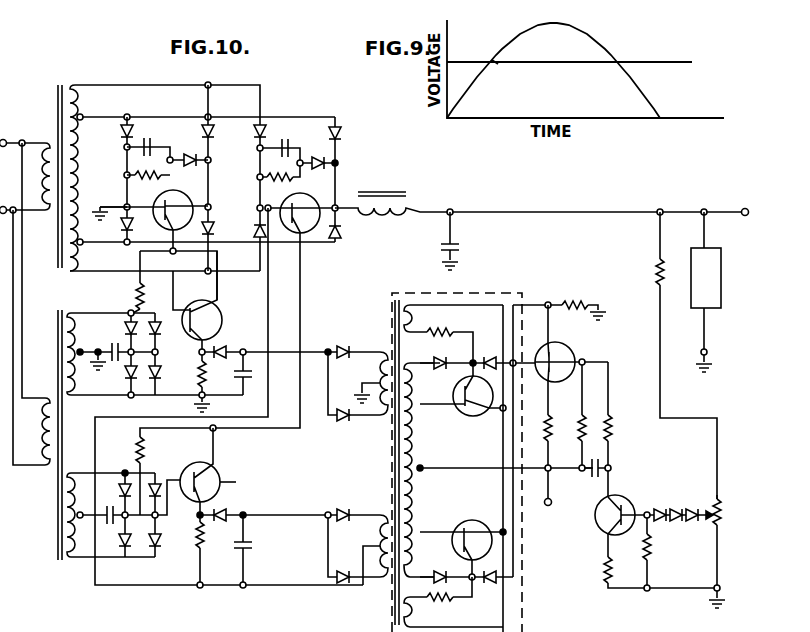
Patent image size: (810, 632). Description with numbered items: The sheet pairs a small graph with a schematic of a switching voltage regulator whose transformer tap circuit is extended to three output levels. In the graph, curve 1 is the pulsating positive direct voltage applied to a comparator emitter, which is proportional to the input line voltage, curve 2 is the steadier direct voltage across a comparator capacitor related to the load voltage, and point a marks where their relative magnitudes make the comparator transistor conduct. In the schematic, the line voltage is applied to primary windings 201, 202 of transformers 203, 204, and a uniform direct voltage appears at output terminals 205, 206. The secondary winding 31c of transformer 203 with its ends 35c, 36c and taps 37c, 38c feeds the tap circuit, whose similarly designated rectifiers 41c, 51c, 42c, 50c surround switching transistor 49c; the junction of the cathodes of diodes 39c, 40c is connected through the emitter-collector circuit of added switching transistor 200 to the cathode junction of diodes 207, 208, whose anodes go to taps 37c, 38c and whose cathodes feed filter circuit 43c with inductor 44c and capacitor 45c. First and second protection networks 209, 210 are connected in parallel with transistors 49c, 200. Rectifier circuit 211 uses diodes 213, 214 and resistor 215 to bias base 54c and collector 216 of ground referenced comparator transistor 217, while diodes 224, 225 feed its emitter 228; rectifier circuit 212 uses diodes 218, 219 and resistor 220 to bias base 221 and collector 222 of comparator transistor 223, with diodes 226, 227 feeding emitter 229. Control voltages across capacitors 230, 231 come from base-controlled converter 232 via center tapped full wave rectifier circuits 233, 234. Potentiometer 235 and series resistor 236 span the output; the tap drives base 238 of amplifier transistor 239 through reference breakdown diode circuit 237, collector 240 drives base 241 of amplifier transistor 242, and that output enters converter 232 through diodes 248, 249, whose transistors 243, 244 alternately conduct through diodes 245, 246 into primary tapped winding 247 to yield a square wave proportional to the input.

In FIG. 9, the curve 1 is at (530, 31).
In FIG. 9, the curve 2 is at (660, 61).
In FIG. 9, the point a is at (496, 62).
In FIG. 10, the transformer 203 is at (60, 84).
In FIG. 10, the primary winding 201 is at (43, 148).
In FIG. 10, the primary winding 202 is at (34, 318).
In FIG. 10, the secondary winding 31c is at (84, 158).
In FIG. 10, the winding terminal 35c is at (86, 86).
In FIG. 10, the terminal tap 37c is at (84, 117).
In FIG. 10, the terminal tap 38c is at (85, 243).
In FIG. 10, the winding terminal 36c is at (76, 271).
In FIG. 10, the controlled rectifier 41c is at (134, 128).
In FIG. 10, the controlled rectifier 51c is at (214, 128).
In FIG. 10, the diode 39c is at (262, 135).
In FIG. 10, the diode 42c is at (127, 221).
In FIG. 10, the diode 50c is at (210, 225).
In FIG. 10, the diode 40c is at (258, 232).
In FIG. 10, the first protection network 209 is at (162, 136).
In FIG. 10, the switching transistor 49c is at (181, 186).
In FIG. 10, the base electrode 54c is at (141, 240).
In FIG. 10, the collector electrode 216 is at (206, 305).
In FIG. 10, the resistor 215 is at (136, 292).
In FIG. 10, the second protection network 210 is at (276, 142).
In FIG. 10, the diode 207 is at (340, 132).
In FIG. 10, the diode 208 is at (340, 238).
In FIG. 10, the switching transistor 200 is at (306, 191).
In FIG. 10, the base electrode 221 is at (305, 224).
In FIG. 10, the filter circuit 43c is at (398, 248).
In FIG. 10, the inductor core 44c is at (412, 209).
In FIG. 10, the capacitor 45c is at (460, 249).
In FIG. 10, the output terminal 205 is at (746, 208).
In FIG. 10, the series resistor 236 is at (656, 265).
In FIG. 10, the output terminal 206 is at (708, 353).
In FIG. 10, the base-controlled converter 232 is at (392, 297).
In FIG. 10, the diode 248 is at (489, 357).
In FIG. 10, the diode 245 is at (440, 361).
In FIG. 10, the primary tapped winding 247 is at (424, 468).
In FIG. 10, the transistor 243 is at (458, 433).
In FIG. 10, the transistor 244 is at (456, 513).
In FIG. 10, the diode 246 is at (440, 572).
In FIG. 10, the diode 249 is at (496, 583).
In FIG. 10, the full wave rectifier circuit 233 is at (334, 444).
In FIG. 10, the full wave rectifier circuit 234 is at (334, 493).
In FIG. 10, the amplifier transistor 242 is at (556, 326).
In FIG. 10, the input base electrode 241 is at (583, 359).
In FIG. 10, the amplifier transistor 239 is at (566, 538).
In FIG. 10, the collector electrode 240 is at (606, 508).
In FIG. 10, the base 238 is at (626, 508).
In FIG. 10, the reference breakdown diode circuit 237 is at (664, 511).
In FIG. 10, the potentiometer 235 is at (724, 512).
In FIG. 10, the transformer 204 is at (60, 311).
In FIG. 10, the rectifier circuit 211 is at (86, 306).
In FIG. 10, the diode 213 is at (127, 328).
In FIG. 10, the diode 214 is at (127, 373).
In FIG. 10, the diode 224 is at (158, 338).
In FIG. 10, the diode 225 is at (158, 379).
In FIG. 10, the comparator transistor 217 is at (221, 308).
In FIG. 10, the emitter electrode 228 is at (188, 310).
In FIG. 10, the capacitor 230 is at (243, 352).
In FIG. 10, the rectifier circuit 212 is at (106, 580).
In FIG. 10, the resistor 220 is at (139, 447).
In FIG. 10, the diode 218 is at (124, 490).
In FIG. 10, the diode 219 is at (121, 545).
In FIG. 10, the diode 226 is at (156, 488).
In FIG. 10, the diode 227 is at (158, 549).
In FIG. 10, the comparator transistor 223 is at (223, 448).
In FIG. 10, the emitter electrode 229 is at (200, 462).
In FIG. 10, the collector electrode 222 is at (236, 484).
In FIG. 10, the capacitor 231 is at (254, 549).